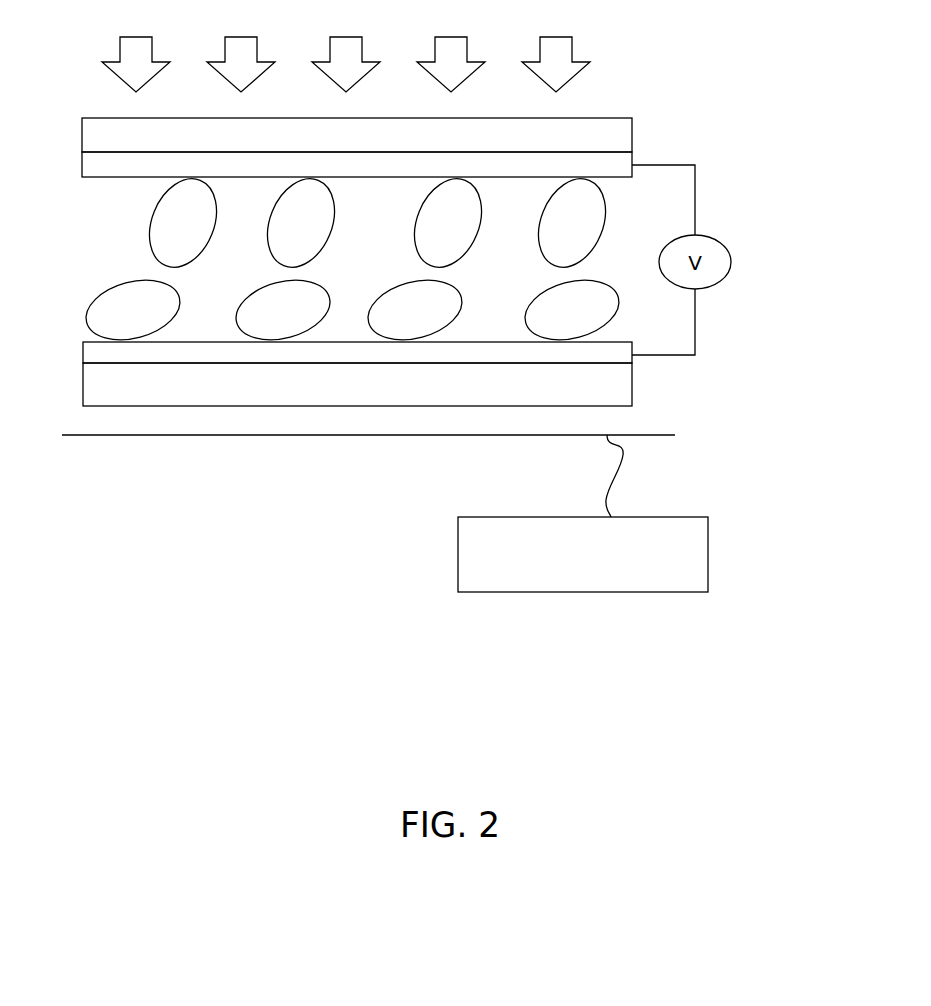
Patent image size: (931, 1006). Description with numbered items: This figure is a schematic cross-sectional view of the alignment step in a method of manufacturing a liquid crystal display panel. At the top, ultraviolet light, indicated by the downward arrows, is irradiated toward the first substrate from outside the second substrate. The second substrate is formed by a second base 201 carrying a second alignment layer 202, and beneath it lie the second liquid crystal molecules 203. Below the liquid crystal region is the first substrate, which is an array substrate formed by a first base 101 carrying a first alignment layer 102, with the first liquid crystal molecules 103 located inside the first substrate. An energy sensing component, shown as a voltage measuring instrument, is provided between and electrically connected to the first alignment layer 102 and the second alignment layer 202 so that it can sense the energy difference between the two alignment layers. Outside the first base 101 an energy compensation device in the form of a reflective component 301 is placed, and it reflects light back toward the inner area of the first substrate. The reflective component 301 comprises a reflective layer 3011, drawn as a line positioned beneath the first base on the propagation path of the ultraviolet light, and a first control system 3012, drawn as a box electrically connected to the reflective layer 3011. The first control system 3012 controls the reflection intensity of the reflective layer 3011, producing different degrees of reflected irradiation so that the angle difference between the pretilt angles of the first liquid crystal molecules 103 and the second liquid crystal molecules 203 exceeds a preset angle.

The second base 201 is at (603, 133).
The second alignment layer 202 is at (607, 165).
The second liquid crystal molecules 203 is at (583, 222).
The first liquid crystal molecules 103 is at (590, 315).
The first alignment layer 102 is at (618, 353).
The first base 101 is at (613, 390).
The reflective component 301 is at (449, 539).
The reflective layer 3011 is at (655, 433).
The first control system 3012 is at (658, 565).